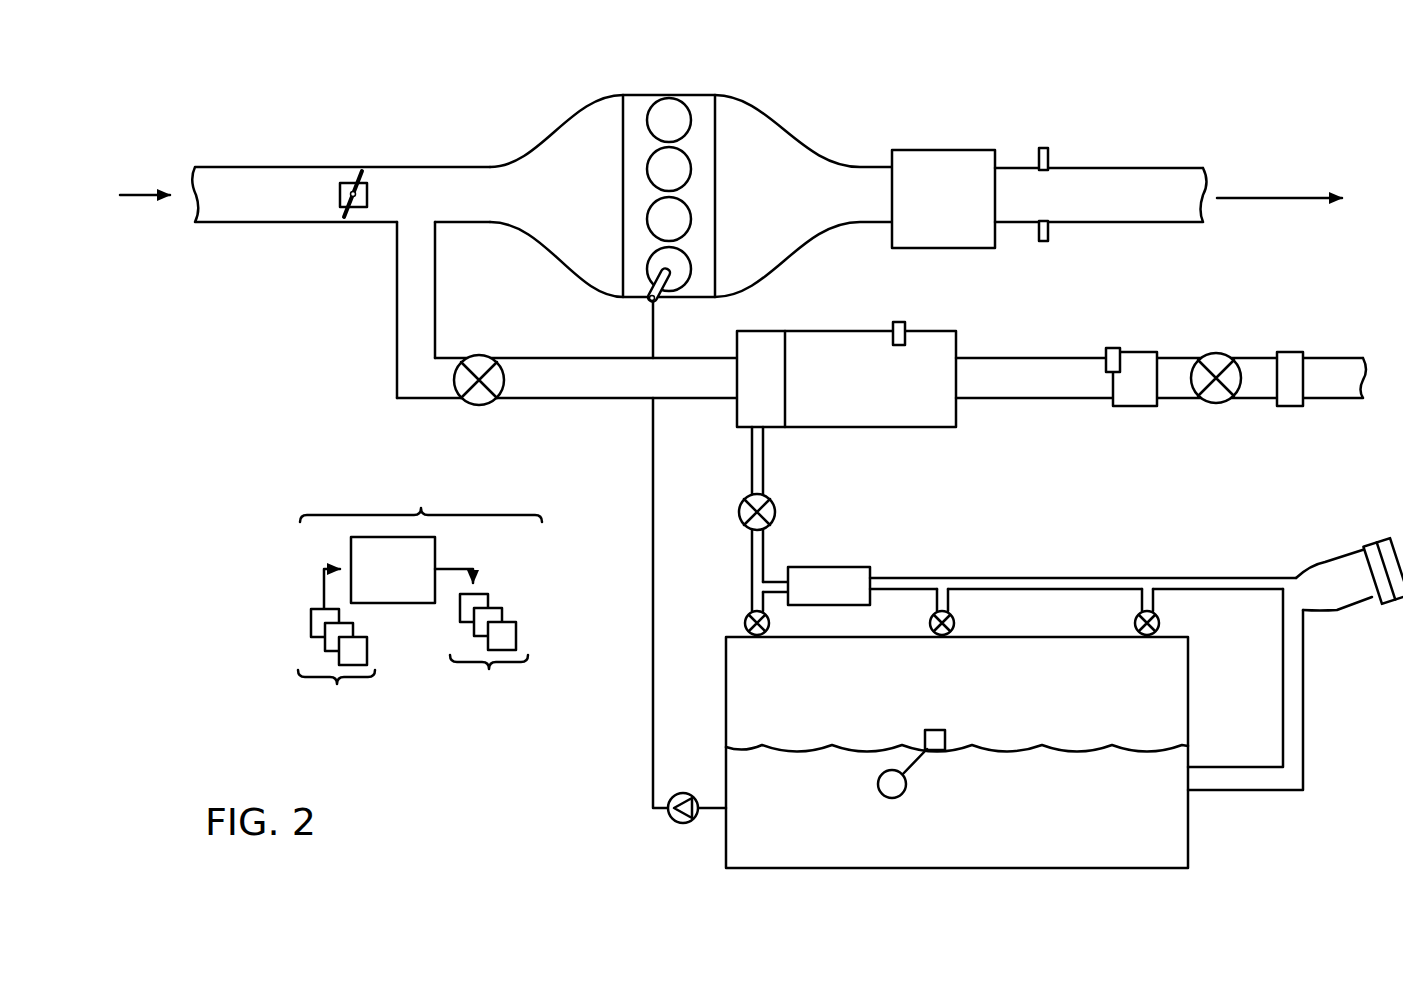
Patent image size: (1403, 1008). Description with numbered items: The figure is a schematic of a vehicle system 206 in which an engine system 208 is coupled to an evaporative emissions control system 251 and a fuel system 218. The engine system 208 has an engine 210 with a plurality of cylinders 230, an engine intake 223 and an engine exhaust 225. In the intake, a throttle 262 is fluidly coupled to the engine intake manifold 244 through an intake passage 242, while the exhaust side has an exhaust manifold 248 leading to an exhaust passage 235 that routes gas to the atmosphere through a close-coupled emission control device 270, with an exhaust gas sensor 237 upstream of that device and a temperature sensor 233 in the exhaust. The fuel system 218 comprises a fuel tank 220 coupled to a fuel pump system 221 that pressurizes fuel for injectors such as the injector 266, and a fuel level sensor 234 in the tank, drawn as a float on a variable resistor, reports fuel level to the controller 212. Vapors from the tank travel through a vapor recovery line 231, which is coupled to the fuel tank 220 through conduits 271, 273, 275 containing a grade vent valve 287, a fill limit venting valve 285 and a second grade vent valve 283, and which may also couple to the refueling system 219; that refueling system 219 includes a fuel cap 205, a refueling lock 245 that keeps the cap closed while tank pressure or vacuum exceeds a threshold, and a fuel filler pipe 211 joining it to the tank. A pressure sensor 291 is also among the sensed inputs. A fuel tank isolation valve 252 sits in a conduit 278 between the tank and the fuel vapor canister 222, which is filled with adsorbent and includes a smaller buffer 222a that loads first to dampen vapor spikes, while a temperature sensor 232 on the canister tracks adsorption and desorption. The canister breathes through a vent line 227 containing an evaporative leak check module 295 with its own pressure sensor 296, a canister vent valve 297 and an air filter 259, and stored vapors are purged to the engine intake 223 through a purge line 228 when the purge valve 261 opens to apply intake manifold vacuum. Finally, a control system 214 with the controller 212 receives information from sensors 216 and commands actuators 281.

The vehicle system 206 is at (206, 96).
The engine system 208 is at (1007, 94).
The engine exhaust 225 is at (884, 102).
The engine 210 is at (716, 178).
The cylinders 230 is at (690, 113).
The engine intake 223 is at (548, 116).
The engine intake manifold 244 is at (556, 196).
The exhaust manifold 248 is at (803, 196).
The throttle 262 is at (367, 196).
The intake passage 242 is at (385, 223).
The injector 266 is at (660, 298).
The purge valve 261 is at (480, 356).
The purge line 228 is at (567, 378).
The fuel vapor canister 222 is at (956, 351).
The buffer 222a is at (760, 331).
The temperature sensor 232 is at (898, 322).
The vent line 227 is at (1161, 378).
The pressure sensor 296 is at (1109, 348).
The evaporative leak check module 295 is at (1136, 352).
The canister vent valve 297 is at (1216, 353).
The air filter 259 is at (1293, 352).
The emissions control system 251 is at (1352, 310).
The emission control device 270 is at (931, 151).
The exhaust gas sensor 237 is at (1040, 158).
The temperature sensor 233 is at (1040, 232).
The exhaust passage 235 is at (1159, 167).
The conduit 278 is at (752, 458).
The fuel tank isolation valve 252 is at (750, 522).
The pressure sensor 291 is at (873, 578).
The grade vent valve 287 is at (745, 622).
The conduit 271 is at (766, 598).
The conduit 273 is at (937, 602).
The fill limit venting valve 285 is at (951, 620).
The conduit 275 is at (1140, 602).
The grade vent valve 283 is at (1156, 622).
The vapor recovery line 231 is at (1205, 578).
The fuel cap 205 is at (1381, 543).
The refueling system 219 is at (1352, 535).
The fuel filler pipe 211 is at (1305, 686).
The refueling lock 245 is at (1386, 600).
The fuel tank 220 is at (1190, 741).
The fuel level sensor 234 is at (940, 730).
The fuel pump system 221 is at (687, 795).
The fuel system 218 is at (1243, 838).
The control system 214 is at (420, 595).
The controller 212 is at (393, 570).
The sensors 216 is at (336, 646).
The actuators 281 is at (482, 639).